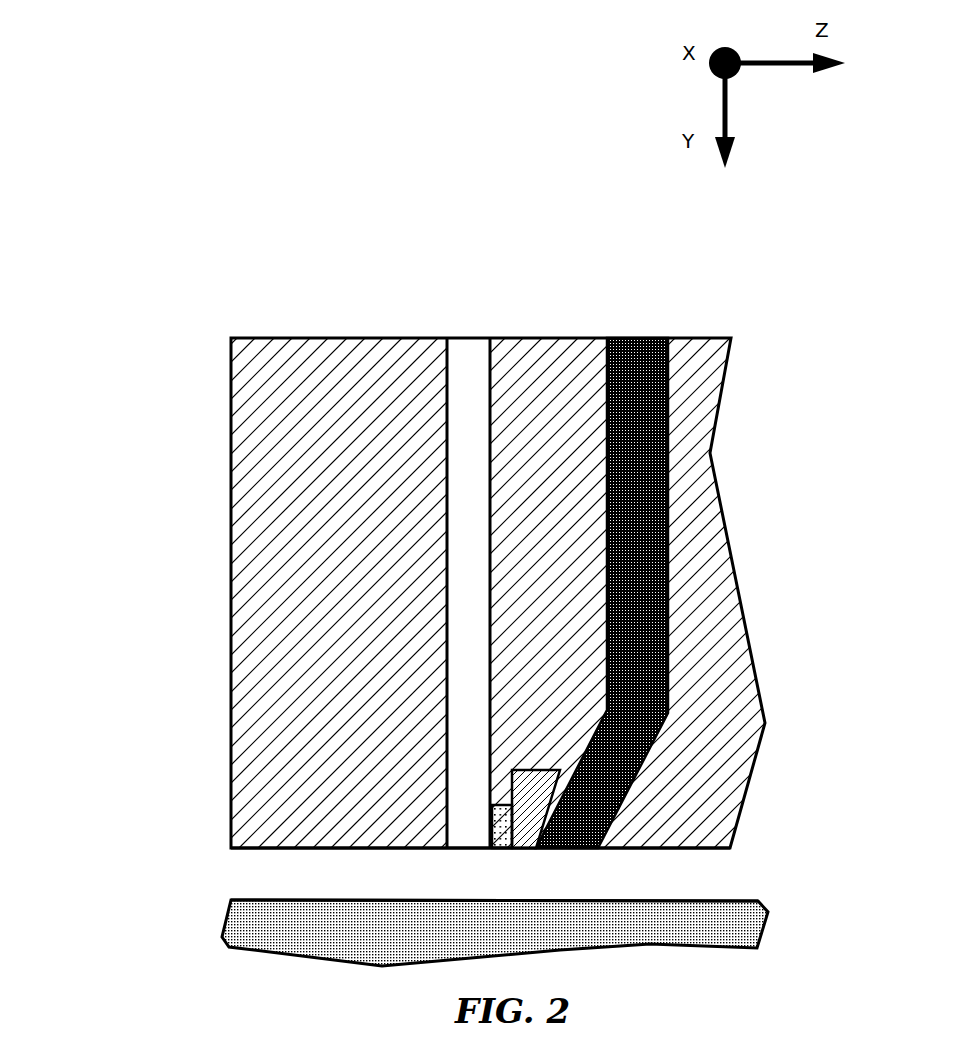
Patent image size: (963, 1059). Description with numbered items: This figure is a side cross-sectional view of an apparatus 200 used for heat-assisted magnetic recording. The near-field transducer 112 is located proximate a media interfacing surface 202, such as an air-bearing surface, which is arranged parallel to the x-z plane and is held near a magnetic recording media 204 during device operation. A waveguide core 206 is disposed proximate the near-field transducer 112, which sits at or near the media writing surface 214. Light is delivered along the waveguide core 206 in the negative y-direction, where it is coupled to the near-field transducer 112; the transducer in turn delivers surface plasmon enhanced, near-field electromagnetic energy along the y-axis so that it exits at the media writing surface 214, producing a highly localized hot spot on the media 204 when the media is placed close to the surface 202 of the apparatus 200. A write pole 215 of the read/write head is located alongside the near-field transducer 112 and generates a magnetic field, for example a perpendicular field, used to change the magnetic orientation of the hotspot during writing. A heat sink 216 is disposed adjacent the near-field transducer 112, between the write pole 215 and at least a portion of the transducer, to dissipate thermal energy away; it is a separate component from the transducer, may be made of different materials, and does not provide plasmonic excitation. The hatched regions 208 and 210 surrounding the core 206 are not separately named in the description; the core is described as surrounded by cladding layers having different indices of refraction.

The apparatus 200 is at (172, 292).
The media interfacing surface 202 is at (262, 851).
The magnetic recording media 204 is at (750, 912).
The waveguide core 206 is at (477, 511).
The dielectric region 208 is at (240, 390).
The dielectric layer 210 is at (540, 340).
The near-field transducer 112 is at (503, 852).
The media writing surface 214 is at (705, 900).
The write pole 215 is at (648, 522).
The heat sink 216 is at (533, 852).